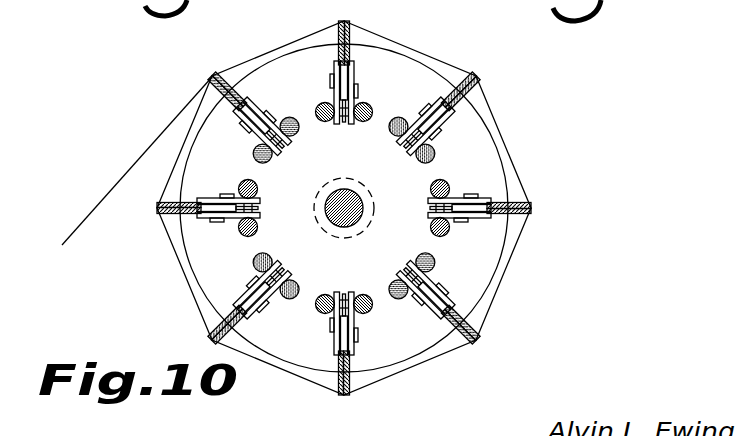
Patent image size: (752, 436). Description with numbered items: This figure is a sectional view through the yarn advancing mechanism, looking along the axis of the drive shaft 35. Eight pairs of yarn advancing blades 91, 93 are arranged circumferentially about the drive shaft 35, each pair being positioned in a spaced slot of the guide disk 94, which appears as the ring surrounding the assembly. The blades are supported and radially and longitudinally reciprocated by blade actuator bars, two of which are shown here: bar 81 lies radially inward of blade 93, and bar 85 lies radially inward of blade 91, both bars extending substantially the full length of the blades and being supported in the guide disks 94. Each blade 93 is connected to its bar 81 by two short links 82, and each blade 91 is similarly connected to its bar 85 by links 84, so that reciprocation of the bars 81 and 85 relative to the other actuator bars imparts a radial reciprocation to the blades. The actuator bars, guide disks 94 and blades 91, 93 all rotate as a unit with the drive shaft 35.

The yarn advancing blade 91 is at (339, 36).
The yarn advancing blade 93 is at (353, 43).
The link 84 is at (337, 88).
The short link 82 is at (357, 90).
The blade actuating bar 85 is at (320, 107).
The blade actuating bar 81 is at (370, 107).
The guide disk 94 is at (497, 171).
The drive shaft 35 is at (358, 197).